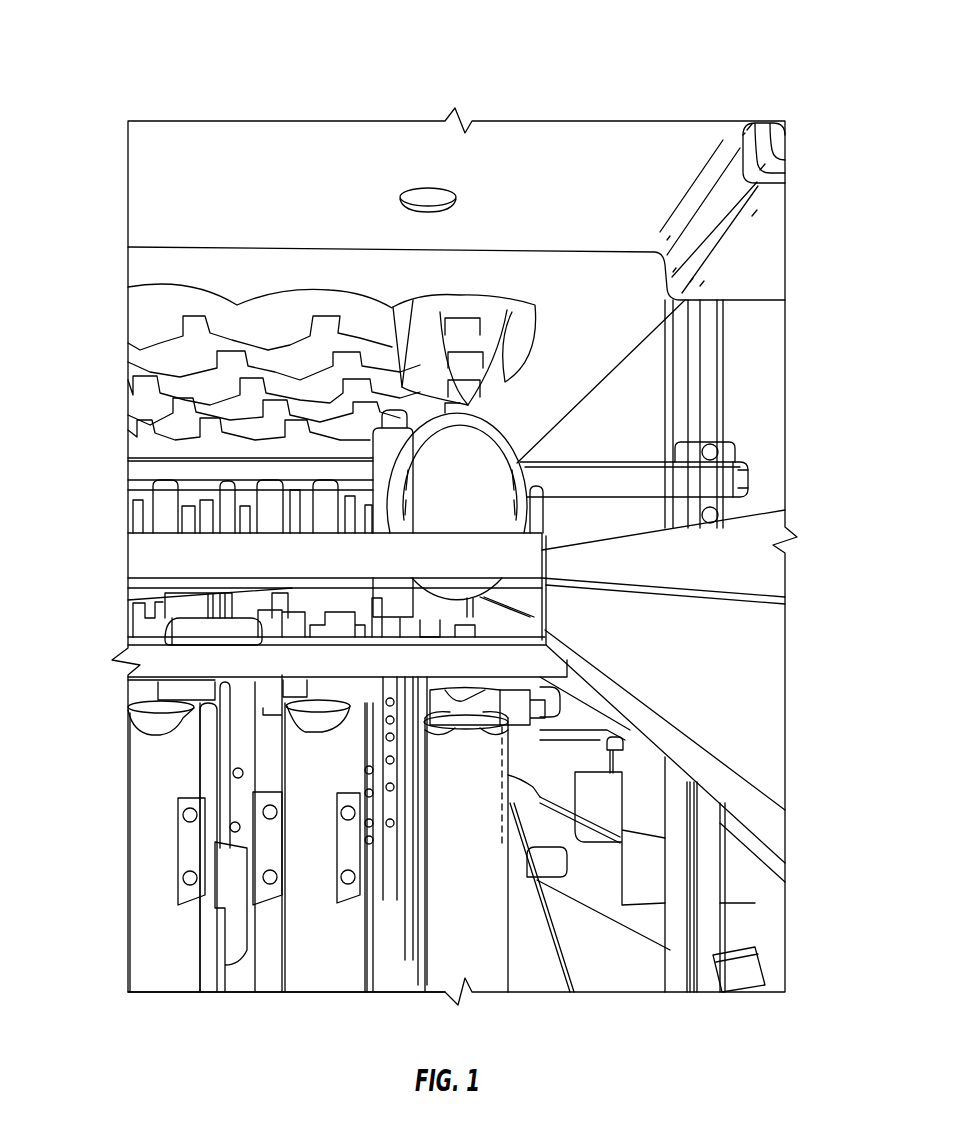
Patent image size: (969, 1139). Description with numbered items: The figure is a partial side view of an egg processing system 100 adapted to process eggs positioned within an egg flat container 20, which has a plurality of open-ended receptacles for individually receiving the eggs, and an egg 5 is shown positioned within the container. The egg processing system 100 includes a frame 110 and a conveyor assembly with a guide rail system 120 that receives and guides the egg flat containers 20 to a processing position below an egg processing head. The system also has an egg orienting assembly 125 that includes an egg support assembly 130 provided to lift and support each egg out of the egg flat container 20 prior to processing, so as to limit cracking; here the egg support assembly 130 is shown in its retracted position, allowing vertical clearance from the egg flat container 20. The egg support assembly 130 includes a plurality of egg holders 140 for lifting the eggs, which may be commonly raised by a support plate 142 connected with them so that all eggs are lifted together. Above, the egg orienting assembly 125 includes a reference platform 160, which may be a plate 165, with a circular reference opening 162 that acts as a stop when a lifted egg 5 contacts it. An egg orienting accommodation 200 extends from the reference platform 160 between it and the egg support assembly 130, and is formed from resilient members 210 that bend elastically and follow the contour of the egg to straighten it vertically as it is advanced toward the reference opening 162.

The egg processing system 100 is at (727, 71).
The egg 5 is at (487, 467).
The egg flat container 20 is at (150, 571).
The frame 110 is at (748, 481).
The guide rail system 120 is at (760, 683).
The egg orienting assembly 125 is at (125, 463).
The egg support assembly 130 is at (237, 1020).
The egg holders 140 is at (125, 807).
The support plate 142 is at (538, 975).
The reference platform 160 is at (152, 270).
The reference opening 162 is at (166, 300).
The reference plate 165 is at (242, 270).
The egg orienting accommodation 200 is at (500, 301).
The resilient members 210 is at (472, 303).